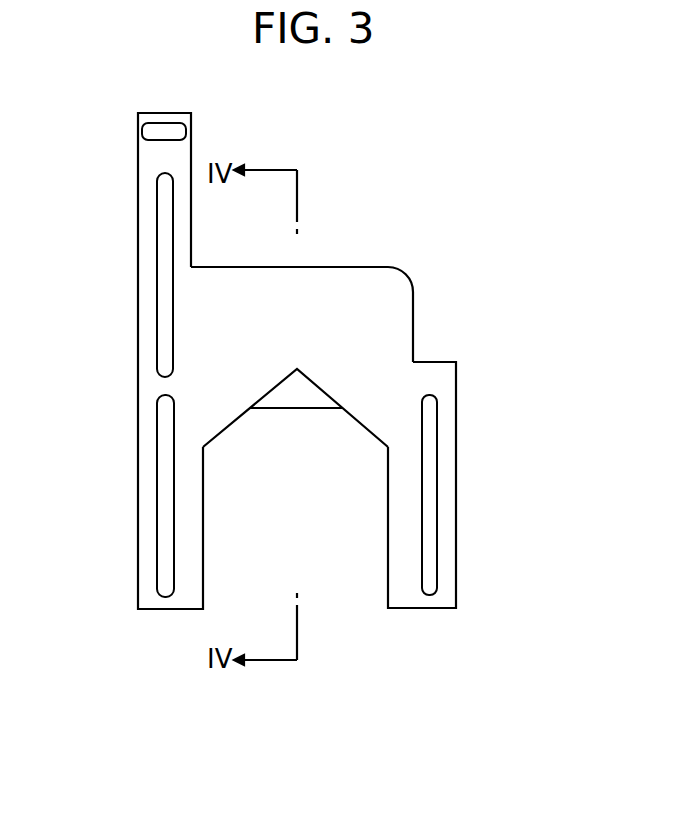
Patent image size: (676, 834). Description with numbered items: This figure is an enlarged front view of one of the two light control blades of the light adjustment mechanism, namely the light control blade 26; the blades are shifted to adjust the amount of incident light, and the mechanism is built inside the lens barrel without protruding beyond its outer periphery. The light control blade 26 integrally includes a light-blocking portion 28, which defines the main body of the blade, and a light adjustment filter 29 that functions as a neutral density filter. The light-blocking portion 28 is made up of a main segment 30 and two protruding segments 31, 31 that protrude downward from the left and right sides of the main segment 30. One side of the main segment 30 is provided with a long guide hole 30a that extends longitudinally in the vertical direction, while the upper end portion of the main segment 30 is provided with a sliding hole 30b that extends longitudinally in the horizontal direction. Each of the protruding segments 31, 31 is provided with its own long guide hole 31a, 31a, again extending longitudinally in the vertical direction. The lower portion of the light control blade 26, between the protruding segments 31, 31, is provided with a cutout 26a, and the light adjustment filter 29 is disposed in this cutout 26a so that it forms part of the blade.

The light control blade 26 is at (449, 126).
The cutout 26a is at (326, 400).
The light-blocking portion 28 is at (333, 272).
The light adjustment filter 29 is at (288, 402).
The main segment 30 is at (397, 293).
The long guide hole 30a is at (172, 265).
The sliding hole 30b is at (175, 134).
The protruding segment 31 is at (145, 550).
The long guide hole 31a is at (172, 450).